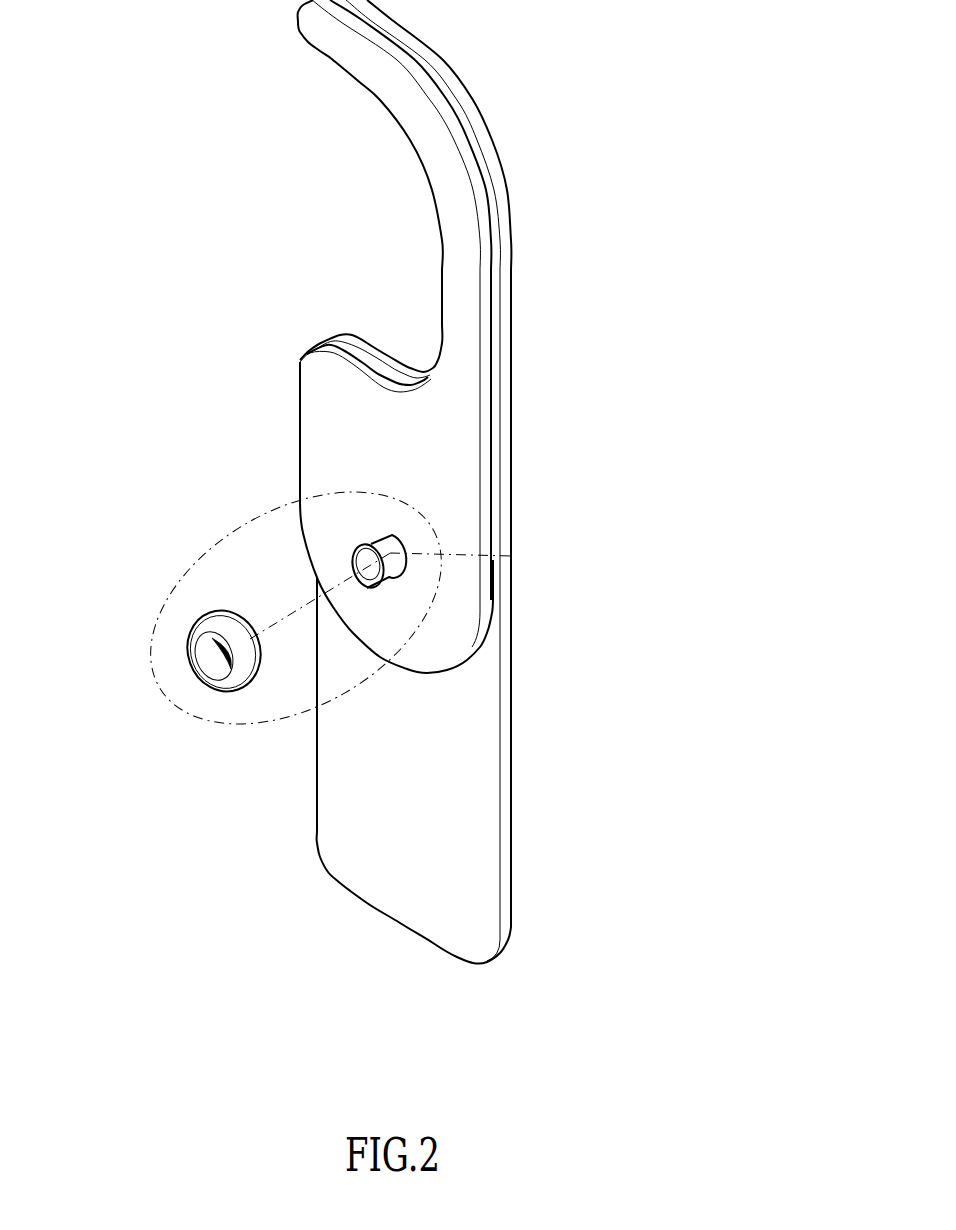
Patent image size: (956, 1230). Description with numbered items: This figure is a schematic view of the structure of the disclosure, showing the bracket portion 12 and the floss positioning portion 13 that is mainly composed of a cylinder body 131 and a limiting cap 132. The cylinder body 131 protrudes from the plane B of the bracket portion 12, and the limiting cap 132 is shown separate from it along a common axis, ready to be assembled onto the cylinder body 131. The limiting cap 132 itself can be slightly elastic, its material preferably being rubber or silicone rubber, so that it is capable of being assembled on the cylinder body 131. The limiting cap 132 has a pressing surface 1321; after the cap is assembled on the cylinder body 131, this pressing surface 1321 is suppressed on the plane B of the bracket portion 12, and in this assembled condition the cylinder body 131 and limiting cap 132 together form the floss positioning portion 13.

The bracket portion 12 is at (322, 400).
The floss positioning portion 13 is at (422, 513).
The cylinder body 131 is at (400, 551).
The limiting cap 132 is at (163, 632).
The pressing surface 1321 is at (243, 610).
The plane B is at (410, 578).